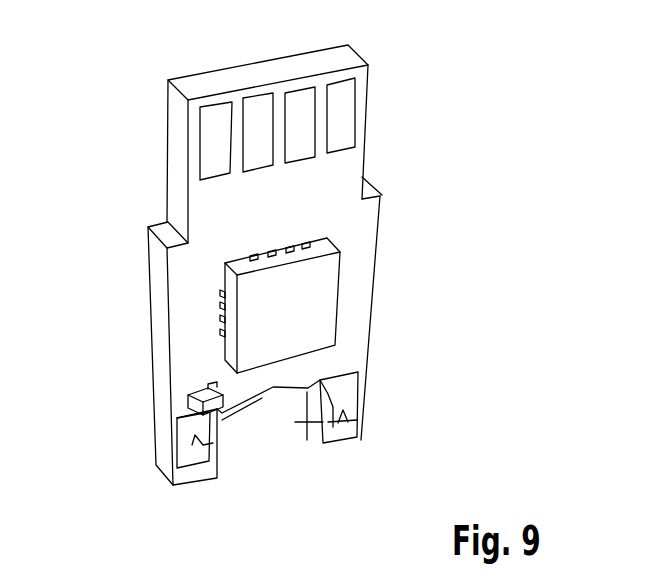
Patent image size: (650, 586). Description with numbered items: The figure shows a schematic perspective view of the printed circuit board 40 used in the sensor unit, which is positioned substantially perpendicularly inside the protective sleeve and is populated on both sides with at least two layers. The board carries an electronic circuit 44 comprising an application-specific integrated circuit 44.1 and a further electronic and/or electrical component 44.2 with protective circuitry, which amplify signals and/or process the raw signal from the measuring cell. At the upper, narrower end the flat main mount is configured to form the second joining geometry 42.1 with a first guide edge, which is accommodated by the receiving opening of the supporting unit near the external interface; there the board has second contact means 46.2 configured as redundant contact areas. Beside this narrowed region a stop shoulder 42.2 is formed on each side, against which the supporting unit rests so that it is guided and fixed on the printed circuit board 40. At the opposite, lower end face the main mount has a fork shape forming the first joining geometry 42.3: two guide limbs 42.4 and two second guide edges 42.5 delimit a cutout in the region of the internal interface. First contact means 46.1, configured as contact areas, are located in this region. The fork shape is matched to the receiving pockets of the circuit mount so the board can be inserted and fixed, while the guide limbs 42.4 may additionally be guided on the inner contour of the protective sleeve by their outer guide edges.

The printed circuit board 40 is at (131, 64).
The second joining geometry 42.1 is at (176, 128).
The stop shoulder 42.2 is at (162, 229).
The first joining geometry 42.3 is at (312, 452).
The guide limbs 42.4 is at (199, 479).
The second guide edges 42.5 is at (213, 453).
The electronic circuit 44 is at (116, 290).
The application-specific integrated circuit (ASIC) 44.1 is at (315, 297).
The electronic and/or electrical component 44.2 is at (190, 393).
The first contact means 46.1 is at (213, 443).
The second contact means 46.2 is at (339, 90).